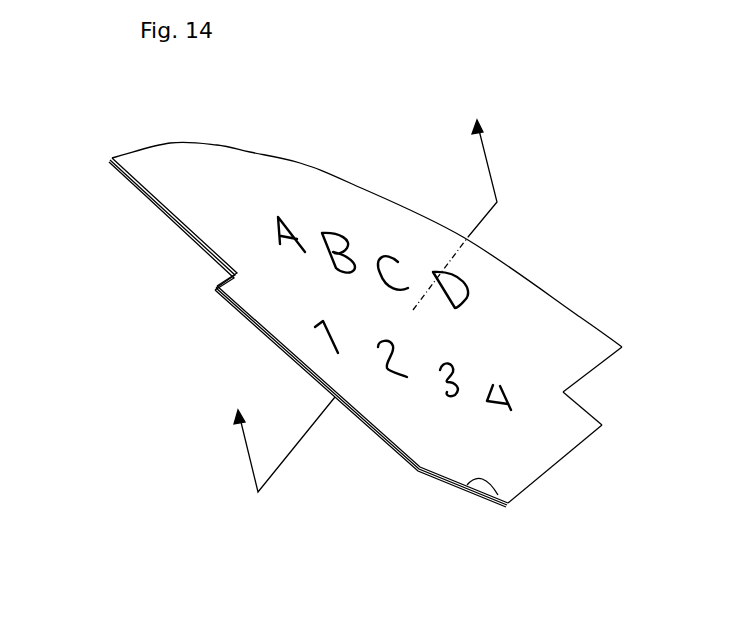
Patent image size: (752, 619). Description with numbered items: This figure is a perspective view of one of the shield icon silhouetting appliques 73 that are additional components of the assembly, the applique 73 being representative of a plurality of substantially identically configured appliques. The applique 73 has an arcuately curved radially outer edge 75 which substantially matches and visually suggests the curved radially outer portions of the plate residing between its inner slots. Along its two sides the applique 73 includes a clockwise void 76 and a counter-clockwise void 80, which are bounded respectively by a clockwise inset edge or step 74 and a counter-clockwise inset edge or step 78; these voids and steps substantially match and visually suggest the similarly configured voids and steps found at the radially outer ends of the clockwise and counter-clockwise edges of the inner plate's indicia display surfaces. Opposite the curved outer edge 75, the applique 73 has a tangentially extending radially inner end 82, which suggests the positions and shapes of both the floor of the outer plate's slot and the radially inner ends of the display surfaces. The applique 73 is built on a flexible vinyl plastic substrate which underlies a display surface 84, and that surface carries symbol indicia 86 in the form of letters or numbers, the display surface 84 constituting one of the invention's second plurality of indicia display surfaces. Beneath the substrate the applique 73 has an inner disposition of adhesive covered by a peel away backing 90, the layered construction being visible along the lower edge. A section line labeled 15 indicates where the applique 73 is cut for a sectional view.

The section line 15- 15 is at (361, 293).
The shield icon silhouetting applique 73 is at (538, 274).
The clockwise inset edge or step 74 is at (592, 368).
The arcuately curved radially outer edge 75 is at (368, 180).
The clockwise void 76 is at (608, 393).
The counter-clockwise inset edge or step 78 is at (158, 198).
The counter-clockwise void 80 is at (168, 233).
The tangentially extending radially inner end 82 is at (500, 497).
The display surface 84 is at (295, 198).
The symbol indicia 86 is at (460, 394).
The peel away backing 90 is at (357, 413).